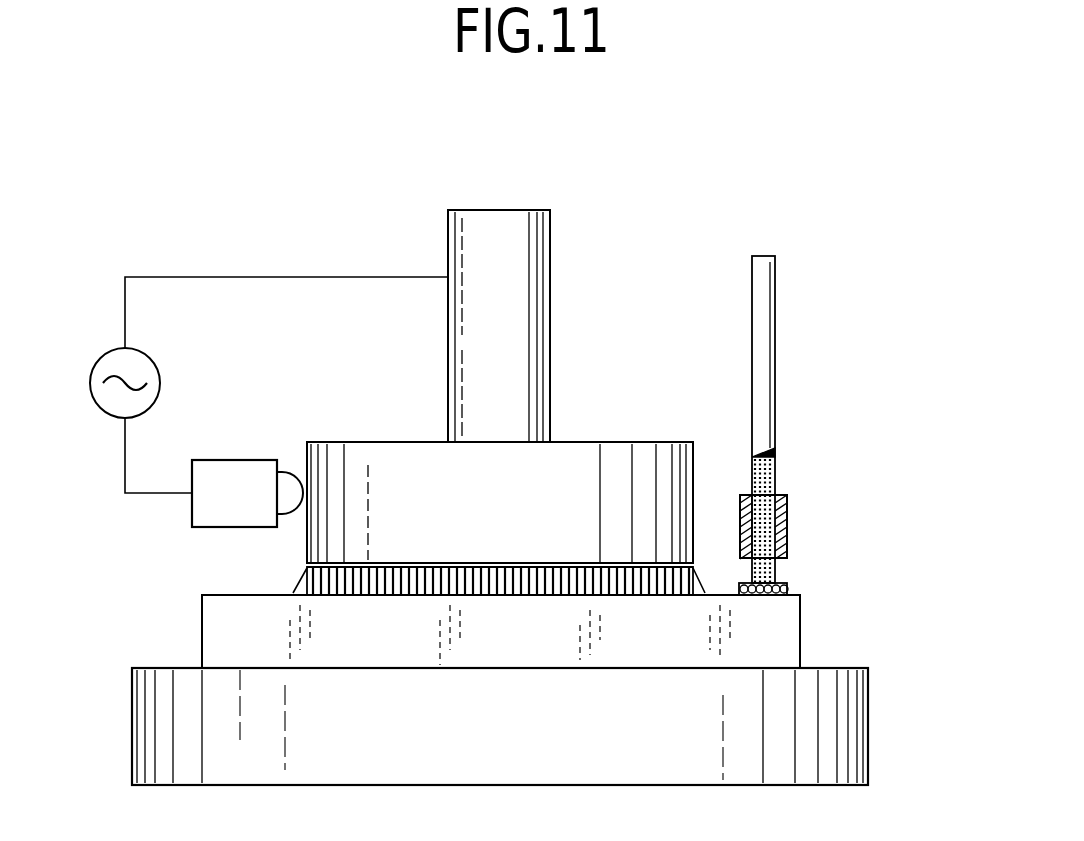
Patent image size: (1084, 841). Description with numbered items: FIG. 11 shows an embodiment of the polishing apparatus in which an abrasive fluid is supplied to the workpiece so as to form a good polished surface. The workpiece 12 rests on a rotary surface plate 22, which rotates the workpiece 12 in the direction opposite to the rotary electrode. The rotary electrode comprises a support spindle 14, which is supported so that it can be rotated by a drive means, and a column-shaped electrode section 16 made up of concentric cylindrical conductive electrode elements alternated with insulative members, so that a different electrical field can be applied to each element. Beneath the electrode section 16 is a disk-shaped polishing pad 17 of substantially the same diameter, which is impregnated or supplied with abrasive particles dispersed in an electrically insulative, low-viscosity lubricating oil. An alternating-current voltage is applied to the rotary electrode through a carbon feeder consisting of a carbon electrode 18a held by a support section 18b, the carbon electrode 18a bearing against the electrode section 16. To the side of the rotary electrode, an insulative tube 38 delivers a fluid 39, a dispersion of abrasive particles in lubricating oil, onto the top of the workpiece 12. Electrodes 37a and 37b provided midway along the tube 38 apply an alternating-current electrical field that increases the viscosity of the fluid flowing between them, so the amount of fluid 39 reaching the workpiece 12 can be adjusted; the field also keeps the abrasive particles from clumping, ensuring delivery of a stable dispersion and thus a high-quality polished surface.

The workpiece 12 is at (200, 632).
The support spindle 14 is at (540, 250).
The electrode section 16 is at (369, 470).
The polishing pad 17 is at (603, 600).
The carbon electrode 18a is at (298, 512).
The support section 18b is at (192, 508).
The rotary surface plate 22 is at (858, 733).
The electrode 37a is at (790, 510).
The electrode 37b is at (740, 498).
The insulative tube 38 is at (765, 272).
The fluid 39 is at (790, 590).